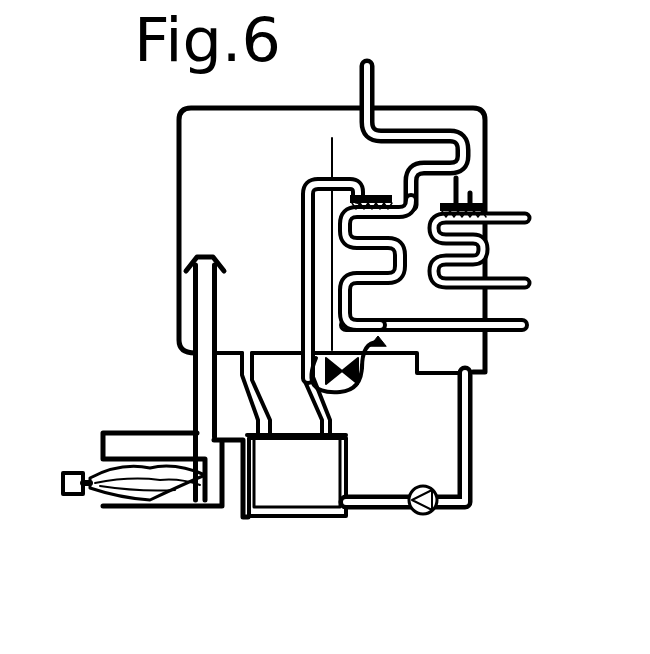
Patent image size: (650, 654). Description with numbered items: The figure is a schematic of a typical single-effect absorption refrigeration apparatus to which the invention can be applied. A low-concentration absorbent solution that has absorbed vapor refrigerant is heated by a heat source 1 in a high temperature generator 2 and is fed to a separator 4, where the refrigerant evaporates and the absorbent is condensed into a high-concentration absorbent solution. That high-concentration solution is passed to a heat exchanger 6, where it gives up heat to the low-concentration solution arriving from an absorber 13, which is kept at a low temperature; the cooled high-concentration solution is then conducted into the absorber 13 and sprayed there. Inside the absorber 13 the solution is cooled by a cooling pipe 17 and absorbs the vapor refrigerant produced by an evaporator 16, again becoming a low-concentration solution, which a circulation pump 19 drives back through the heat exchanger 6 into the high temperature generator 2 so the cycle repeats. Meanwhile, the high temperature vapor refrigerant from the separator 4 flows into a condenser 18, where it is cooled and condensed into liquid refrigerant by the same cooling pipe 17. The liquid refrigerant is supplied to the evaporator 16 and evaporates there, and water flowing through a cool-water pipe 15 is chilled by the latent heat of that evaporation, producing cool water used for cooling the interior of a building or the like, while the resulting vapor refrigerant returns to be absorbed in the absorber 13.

The heat source 1 is at (75, 470).
The high temperature generator 2 is at (152, 430).
The separator 4 is at (178, 236).
The heat exchanger 6 is at (288, 490).
The absorber 13 is at (410, 346).
The cool-water pipe 15 is at (507, 213).
The evaporator 16 is at (477, 236).
The cooling pipe 17 is at (375, 86).
The condenser 18 is at (466, 122).
The circulation pump 19 is at (423, 516).